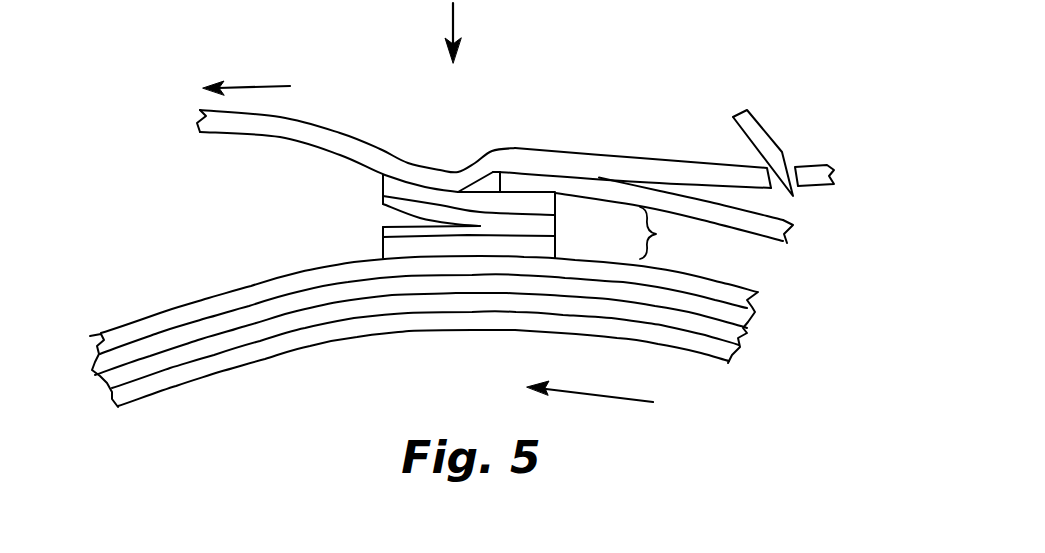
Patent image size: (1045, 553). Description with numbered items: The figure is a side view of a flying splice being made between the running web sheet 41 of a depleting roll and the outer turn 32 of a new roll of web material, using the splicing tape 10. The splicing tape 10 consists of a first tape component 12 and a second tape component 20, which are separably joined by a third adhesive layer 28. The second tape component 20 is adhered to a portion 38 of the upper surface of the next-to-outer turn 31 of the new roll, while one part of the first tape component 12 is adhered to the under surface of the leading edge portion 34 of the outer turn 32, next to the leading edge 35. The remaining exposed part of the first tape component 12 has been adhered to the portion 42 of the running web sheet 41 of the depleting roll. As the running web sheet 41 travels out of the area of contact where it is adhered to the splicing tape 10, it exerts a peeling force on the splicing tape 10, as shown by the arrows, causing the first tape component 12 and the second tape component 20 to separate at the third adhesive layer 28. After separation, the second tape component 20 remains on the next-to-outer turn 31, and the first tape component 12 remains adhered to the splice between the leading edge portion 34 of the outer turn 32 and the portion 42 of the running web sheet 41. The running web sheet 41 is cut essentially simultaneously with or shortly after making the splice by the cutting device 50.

The splicing tape 10 is at (663, 233).
The first tape component 12 is at (382, 186).
The second tape component 20 is at (391, 248).
The third adhesive layer 28 is at (557, 227).
The next-to-outer turn 31 is at (118, 334).
The outer turn 32 is at (778, 233).
The leading edge portion 34 is at (600, 185).
The leading edge 35 is at (486, 181).
The portion of the upper surface of the next-to-outer turn 38 is at (475, 262).
The running web sheet 41 is at (828, 167).
The portion of the running web sheet 42 is at (471, 161).
The cutting device 50 is at (758, 116).